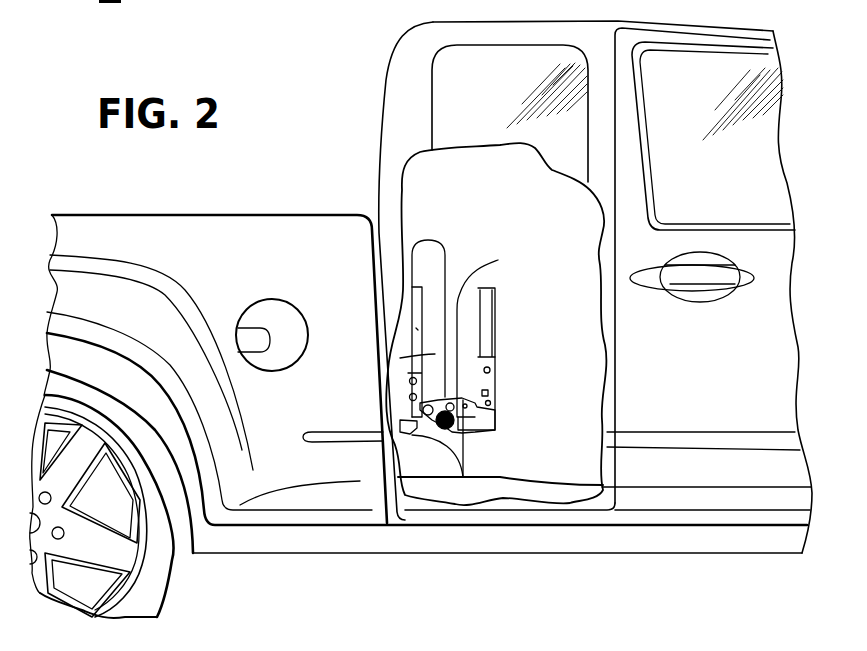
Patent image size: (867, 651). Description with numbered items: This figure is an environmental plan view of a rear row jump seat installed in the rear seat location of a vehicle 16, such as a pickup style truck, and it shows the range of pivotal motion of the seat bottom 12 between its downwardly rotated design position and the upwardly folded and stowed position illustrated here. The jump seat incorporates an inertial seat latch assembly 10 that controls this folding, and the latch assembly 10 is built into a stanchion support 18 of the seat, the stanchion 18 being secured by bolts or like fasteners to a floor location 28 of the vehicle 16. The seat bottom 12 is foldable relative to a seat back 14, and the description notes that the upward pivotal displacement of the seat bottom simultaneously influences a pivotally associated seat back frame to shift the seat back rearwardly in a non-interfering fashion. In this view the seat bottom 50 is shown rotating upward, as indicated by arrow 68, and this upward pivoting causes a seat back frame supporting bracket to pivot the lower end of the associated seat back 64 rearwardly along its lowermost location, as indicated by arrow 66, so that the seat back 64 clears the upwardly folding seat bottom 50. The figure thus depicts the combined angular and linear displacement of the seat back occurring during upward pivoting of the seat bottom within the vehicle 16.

The seat latch assembly 10 is at (443, 333).
The seat bottom 12 is at (502, 330).
The seat back 14 is at (428, 240).
The vehicle 16 is at (422, 47).
The stanchion support 18 is at (408, 460).
The floor location 28 is at (471, 480).
The seat bottom 50 is at (487, 310).
The seat back 64 is at (418, 330).
The arrow 66 is at (400, 342).
The arrow 68 is at (470, 347).